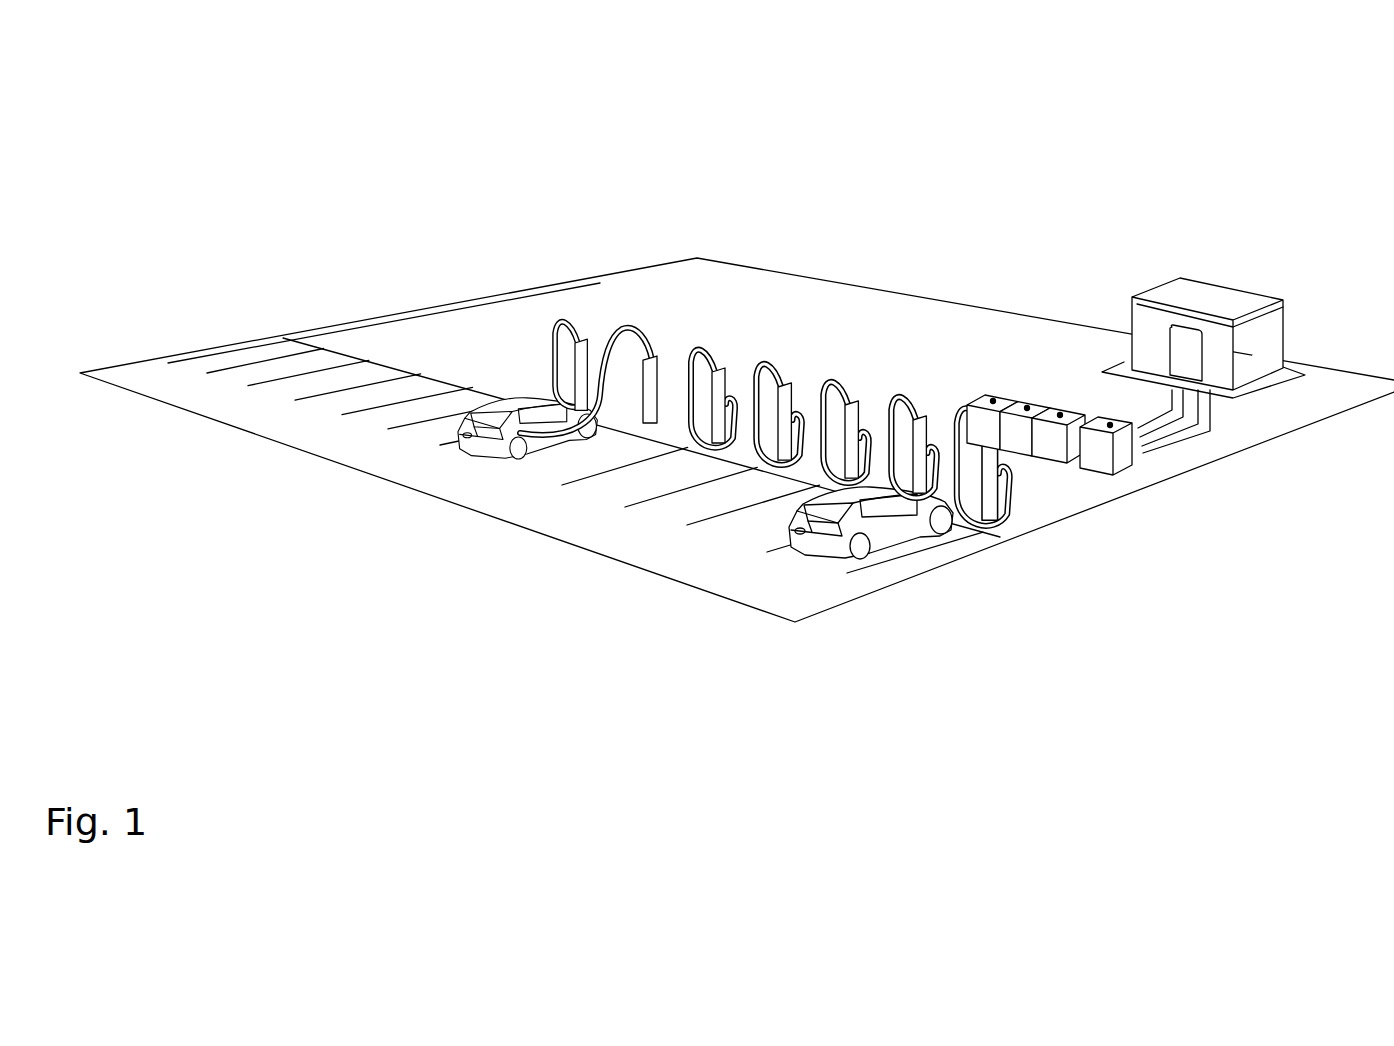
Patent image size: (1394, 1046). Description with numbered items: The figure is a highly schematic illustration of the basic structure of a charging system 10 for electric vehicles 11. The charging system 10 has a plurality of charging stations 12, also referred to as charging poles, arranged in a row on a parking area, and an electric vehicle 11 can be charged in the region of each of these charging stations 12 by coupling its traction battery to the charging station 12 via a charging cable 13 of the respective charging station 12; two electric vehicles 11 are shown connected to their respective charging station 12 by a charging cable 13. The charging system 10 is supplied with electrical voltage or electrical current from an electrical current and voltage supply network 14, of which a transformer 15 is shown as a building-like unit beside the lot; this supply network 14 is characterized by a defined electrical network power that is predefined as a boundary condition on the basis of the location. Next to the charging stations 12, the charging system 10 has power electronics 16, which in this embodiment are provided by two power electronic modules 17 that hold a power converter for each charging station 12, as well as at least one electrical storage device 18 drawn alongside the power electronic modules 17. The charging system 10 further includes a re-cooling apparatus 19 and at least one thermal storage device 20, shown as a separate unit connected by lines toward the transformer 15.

The charging system 10 is at (326, 129).
The electric vehicle 11 is at (480, 463).
The charging station 12 is at (770, 415).
The charging cable 13 is at (972, 508).
The electrical current and voltage supply network 14 is at (1203, 298).
The transformer 15 is at (1221, 284).
The power electronics 16 is at (1048, 279).
The power electronic module 17 is at (993, 401).
The electrical storage device 18 is at (1060, 415).
The re-cooling apparatus 19 is at (1163, 500).
The thermal storage device 20 is at (1110, 425).